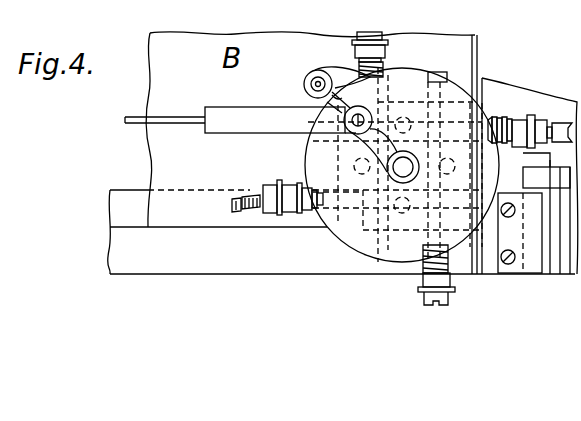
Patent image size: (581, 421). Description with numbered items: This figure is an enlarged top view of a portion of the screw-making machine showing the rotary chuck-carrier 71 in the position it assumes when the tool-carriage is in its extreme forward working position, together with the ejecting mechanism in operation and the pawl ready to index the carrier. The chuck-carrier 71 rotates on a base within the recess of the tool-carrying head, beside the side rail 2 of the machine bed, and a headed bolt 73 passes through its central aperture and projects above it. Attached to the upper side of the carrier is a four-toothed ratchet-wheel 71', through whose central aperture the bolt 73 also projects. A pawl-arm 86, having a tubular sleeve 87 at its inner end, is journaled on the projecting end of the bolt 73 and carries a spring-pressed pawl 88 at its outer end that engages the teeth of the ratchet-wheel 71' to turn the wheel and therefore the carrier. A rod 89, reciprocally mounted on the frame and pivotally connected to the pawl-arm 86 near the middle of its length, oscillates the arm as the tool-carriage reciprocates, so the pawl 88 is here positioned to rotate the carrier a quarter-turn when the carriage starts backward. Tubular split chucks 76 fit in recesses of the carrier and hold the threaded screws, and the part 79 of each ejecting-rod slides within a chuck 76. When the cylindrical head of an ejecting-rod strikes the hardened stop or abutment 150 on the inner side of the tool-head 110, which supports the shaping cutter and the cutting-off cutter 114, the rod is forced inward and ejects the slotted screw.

The side rail 2 is at (128, 265).
The rod 89 is at (172, 117).
The spring-pressed pawl 88 is at (335, 70).
The tubular split chuck 76 is at (372, 33).
The rotary chuck-carrier 71 is at (306, 251).
The ratchet-wheel 71' is at (402, 151).
The sliding part of ejecting-rod 79 is at (437, 72).
The pawl-arm 86 is at (363, 133).
The tubular sleeve 87 is at (393, 173).
The headed bolt 73 is at (403, 170).
The cutter 114 is at (558, 160).
The stop or abutment 150 is at (508, 217).
The head 110 is at (518, 238).